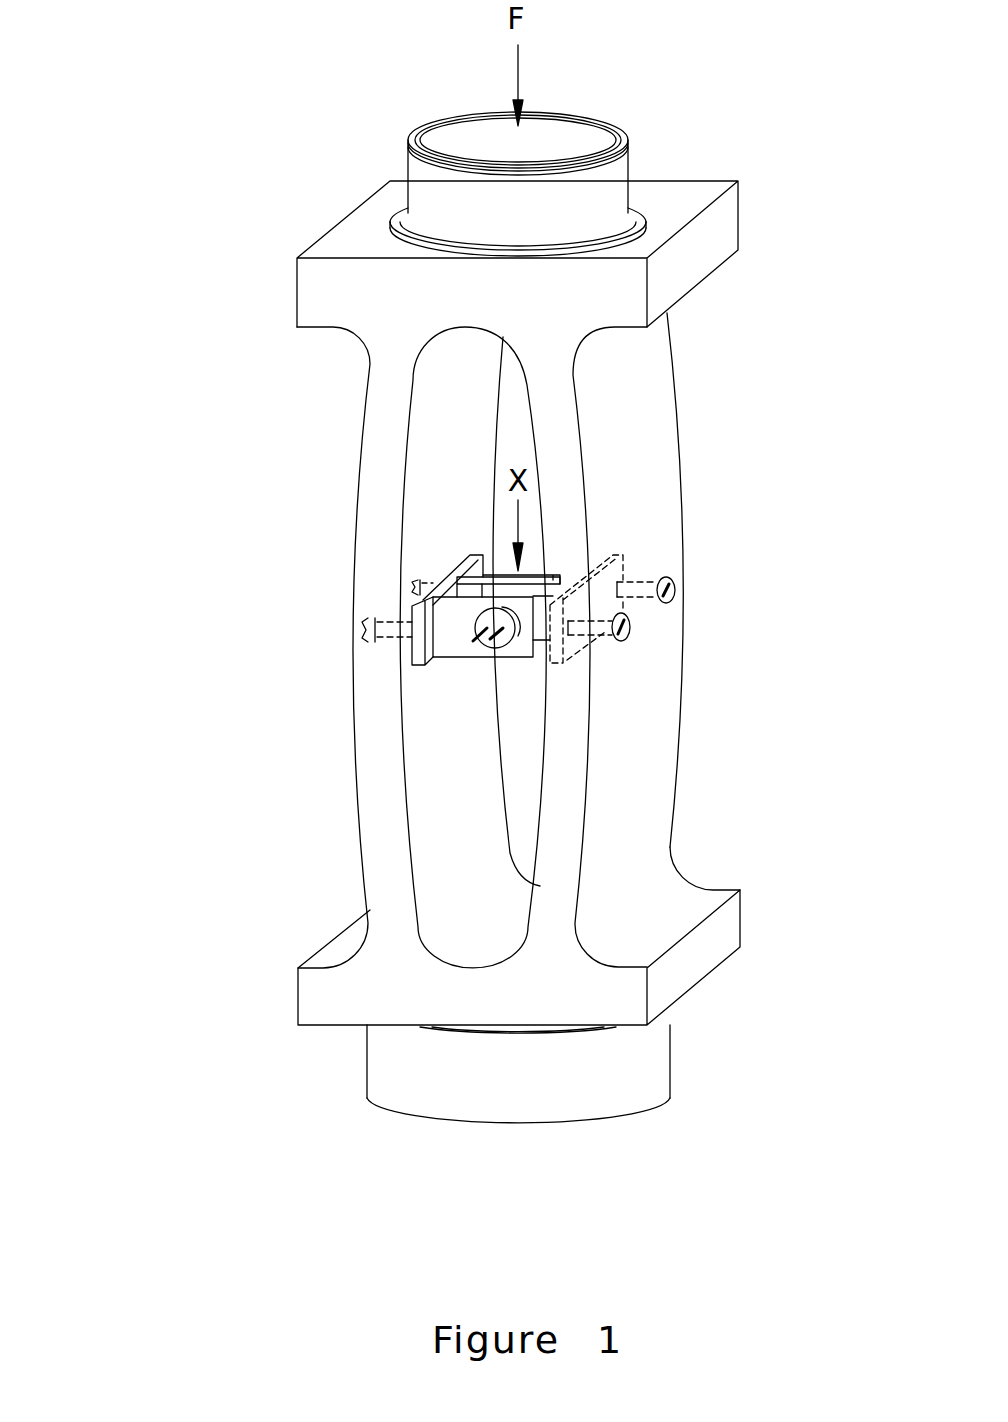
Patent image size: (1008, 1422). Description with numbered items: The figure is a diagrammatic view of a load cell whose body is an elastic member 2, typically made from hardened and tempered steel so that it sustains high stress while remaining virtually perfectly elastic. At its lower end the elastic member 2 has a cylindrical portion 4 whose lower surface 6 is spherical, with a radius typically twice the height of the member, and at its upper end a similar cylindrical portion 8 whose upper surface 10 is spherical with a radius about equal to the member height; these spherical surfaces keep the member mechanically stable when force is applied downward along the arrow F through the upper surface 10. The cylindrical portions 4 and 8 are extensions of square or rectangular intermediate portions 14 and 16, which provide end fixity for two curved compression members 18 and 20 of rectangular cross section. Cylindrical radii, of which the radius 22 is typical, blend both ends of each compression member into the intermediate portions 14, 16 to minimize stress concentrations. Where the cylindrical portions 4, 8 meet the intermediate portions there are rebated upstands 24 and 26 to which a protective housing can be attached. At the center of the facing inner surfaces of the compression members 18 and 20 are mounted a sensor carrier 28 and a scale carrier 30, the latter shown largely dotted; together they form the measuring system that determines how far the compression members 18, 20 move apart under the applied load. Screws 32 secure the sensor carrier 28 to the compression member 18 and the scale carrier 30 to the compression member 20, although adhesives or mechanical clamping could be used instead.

The elastic member 2 is at (752, 209).
The cylindrical portion 4 is at (588, 1131).
The lower surface 6 is at (548, 1128).
The cylindrical portion 8 is at (633, 162).
The upper surface 10 is at (591, 114).
The intermediate portion 14 is at (333, 215).
The intermediate portion 16 is at (290, 1002).
The compression member 18 is at (352, 498).
The compression member 20 is at (716, 640).
The cylindrical radius 22 is at (685, 870).
The rebated upstand 24 is at (645, 200).
The rebated upstand 26 is at (492, 1040).
The sensor carrier 28 is at (412, 650).
The scale carrier 30 is at (640, 563).
The screws 32 is at (408, 587).